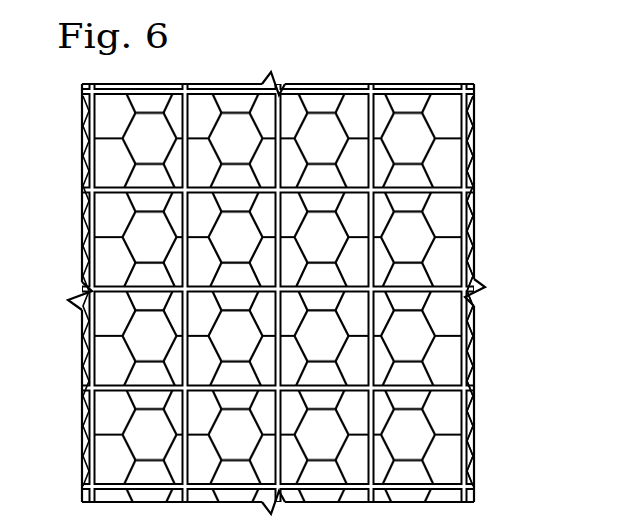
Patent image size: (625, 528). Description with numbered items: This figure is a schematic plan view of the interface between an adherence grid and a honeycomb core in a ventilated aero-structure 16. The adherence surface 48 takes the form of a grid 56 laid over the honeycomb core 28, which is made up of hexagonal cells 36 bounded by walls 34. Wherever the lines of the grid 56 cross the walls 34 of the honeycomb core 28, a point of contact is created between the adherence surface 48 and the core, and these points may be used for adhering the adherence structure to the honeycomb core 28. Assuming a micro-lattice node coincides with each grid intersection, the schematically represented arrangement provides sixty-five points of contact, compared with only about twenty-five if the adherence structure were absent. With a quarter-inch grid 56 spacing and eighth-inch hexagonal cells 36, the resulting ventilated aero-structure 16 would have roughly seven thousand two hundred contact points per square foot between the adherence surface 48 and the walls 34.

The ventilated aero-structure 16 is at (500, 60).
The honeycomb core 28 is at (489, 212).
The walls 34 is at (480, 349).
The hexagonal cells 36 is at (480, 262).
The adherence surface 48 is at (419, 83).
The grid 56 is at (333, 88).